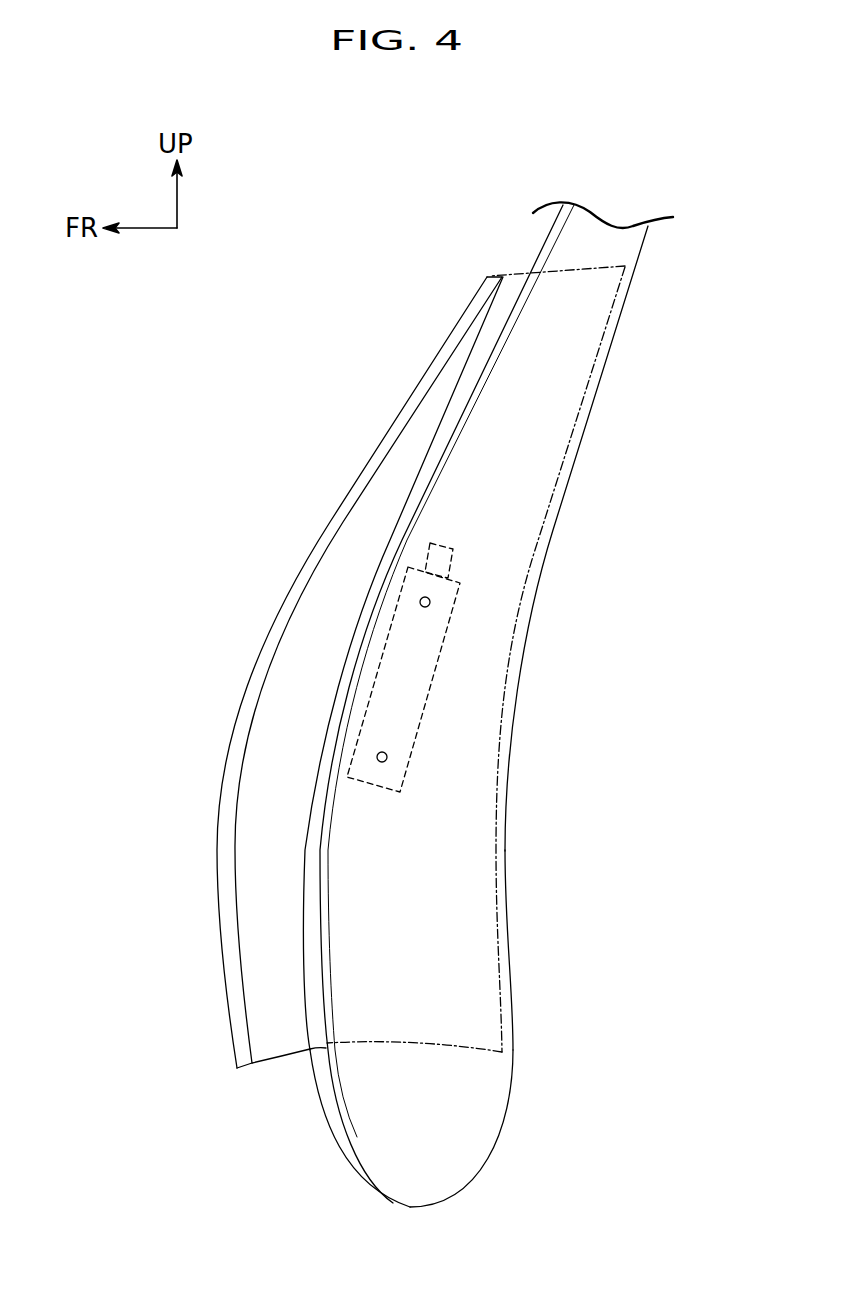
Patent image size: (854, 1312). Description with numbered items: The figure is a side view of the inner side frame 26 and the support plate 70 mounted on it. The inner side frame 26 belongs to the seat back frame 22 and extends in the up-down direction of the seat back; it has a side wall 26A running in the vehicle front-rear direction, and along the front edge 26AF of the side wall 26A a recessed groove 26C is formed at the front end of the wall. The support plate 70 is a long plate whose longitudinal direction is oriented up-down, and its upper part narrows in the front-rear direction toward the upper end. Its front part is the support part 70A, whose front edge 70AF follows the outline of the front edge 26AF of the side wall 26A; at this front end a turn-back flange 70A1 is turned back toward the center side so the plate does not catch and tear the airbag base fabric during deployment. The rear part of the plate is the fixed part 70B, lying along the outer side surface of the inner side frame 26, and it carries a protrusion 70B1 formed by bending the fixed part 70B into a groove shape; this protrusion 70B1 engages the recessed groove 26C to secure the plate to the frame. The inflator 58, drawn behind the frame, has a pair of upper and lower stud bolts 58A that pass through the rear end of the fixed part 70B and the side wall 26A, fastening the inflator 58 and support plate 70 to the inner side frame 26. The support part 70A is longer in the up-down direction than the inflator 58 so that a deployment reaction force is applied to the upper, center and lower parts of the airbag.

The seat back frame 22 is at (619, 322).
The inner side frame 26 is at (579, 447).
The side wall 26A is at (503, 527).
The front edge 26AF is at (472, 378).
The recessed groove 26C is at (440, 437).
The inflator 58 is at (437, 646).
The stud bolts 58A is at (430, 600).
The support plate 70 is at (332, 522).
The support part 70A is at (307, 643).
The front edge 70AF is at (229, 745).
The turn-back flange 70A1 is at (248, 1072).
The fixed part 70B is at (453, 908).
The protrusion 70B1 is at (323, 1047).